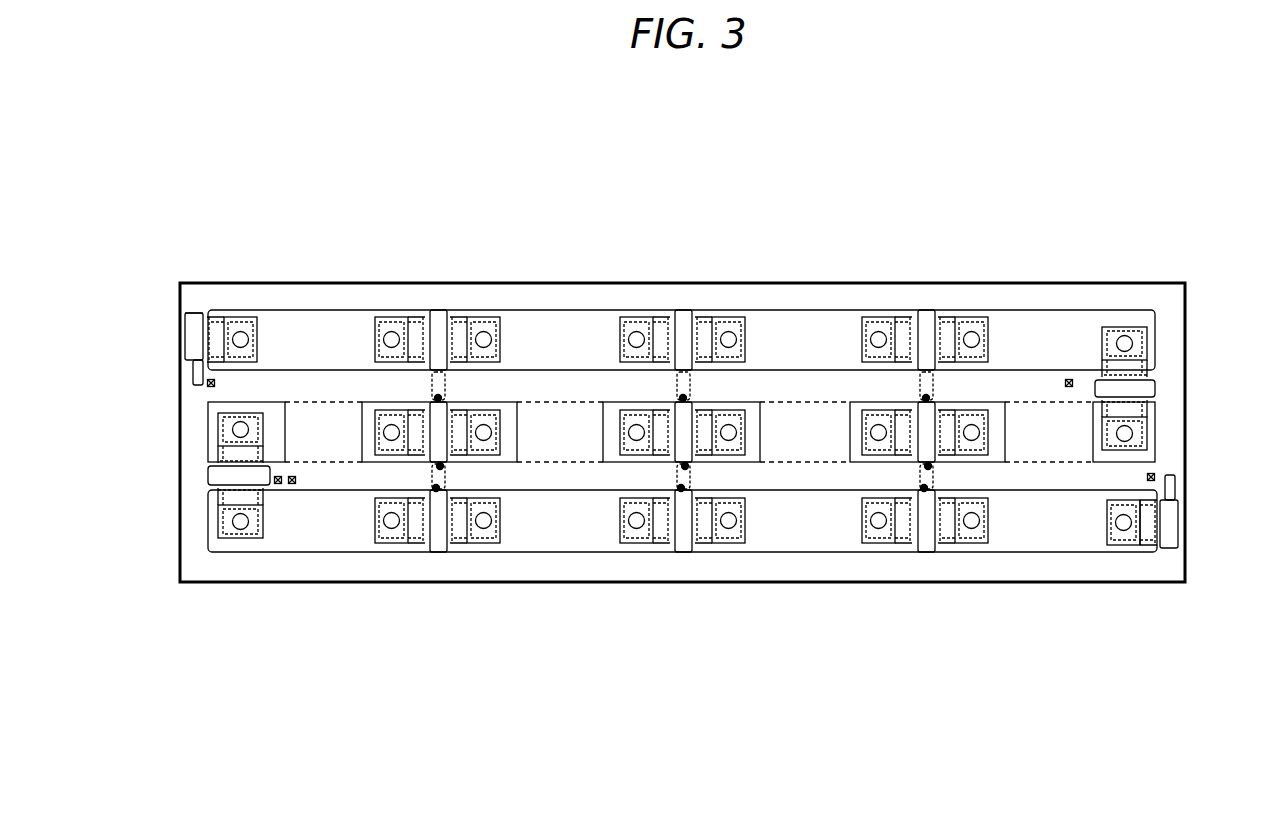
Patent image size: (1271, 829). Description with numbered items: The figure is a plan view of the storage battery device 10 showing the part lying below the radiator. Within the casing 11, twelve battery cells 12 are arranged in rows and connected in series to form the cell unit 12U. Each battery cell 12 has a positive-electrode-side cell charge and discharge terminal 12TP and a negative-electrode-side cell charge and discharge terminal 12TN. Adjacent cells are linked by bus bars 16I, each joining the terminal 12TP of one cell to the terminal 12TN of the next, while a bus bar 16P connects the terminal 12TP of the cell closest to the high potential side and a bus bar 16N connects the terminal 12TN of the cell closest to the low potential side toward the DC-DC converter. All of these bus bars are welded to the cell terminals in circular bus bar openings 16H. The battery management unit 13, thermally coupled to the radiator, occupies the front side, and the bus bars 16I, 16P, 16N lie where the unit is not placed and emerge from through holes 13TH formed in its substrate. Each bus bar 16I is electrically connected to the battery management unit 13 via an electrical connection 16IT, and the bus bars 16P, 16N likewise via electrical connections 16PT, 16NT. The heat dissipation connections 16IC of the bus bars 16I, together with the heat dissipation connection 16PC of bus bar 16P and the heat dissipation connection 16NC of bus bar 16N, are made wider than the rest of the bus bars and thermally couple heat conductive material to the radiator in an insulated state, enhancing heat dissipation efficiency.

The storage battery device 10 is at (685, 128).
The casing 11 is at (556, 340).
The battery cell 12 is at (315, 343).
The positive-electrode-side cell charge and discharge terminal 12TP is at (250, 325).
The negative-electrode-side cell charge and discharge terminal 12TN is at (385, 320).
The cell unit 12U is at (683, 740).
The battery management unit 13 is at (1057, 485).
The through hole 13TH is at (772, 430).
The bus bar 16P is at (196, 335).
The heat dissipation connection 16PC is at (210, 330).
The electrical connection 16PT is at (216, 385).
The bus bar 16N is at (1170, 530).
The heat dissipation connection 16NC is at (1152, 548).
The electrical connection 16NT is at (1146, 478).
The bus bar 16I is at (460, 323).
The heat dissipation connection 16IC is at (433, 312).
The electrical connection 16IT is at (1075, 383).
The bus bar opening 16H is at (233, 343).